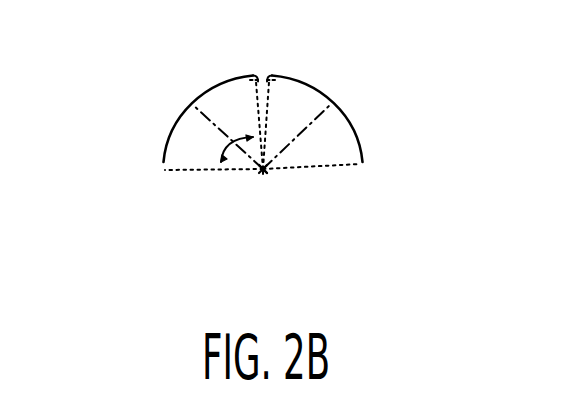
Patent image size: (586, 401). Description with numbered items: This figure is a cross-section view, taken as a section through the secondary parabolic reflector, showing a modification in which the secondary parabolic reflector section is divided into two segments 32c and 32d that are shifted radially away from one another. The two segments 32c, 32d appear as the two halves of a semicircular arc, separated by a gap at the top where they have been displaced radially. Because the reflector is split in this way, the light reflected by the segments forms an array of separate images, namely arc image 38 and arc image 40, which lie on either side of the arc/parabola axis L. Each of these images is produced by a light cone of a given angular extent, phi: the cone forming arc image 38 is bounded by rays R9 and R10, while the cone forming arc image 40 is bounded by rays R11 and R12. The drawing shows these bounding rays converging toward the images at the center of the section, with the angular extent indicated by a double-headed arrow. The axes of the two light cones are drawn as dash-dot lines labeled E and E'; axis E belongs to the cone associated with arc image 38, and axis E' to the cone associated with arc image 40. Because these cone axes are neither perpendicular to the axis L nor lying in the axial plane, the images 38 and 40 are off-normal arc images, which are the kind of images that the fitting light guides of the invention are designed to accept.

The segment 32c is at (208, 90).
The segment 32d is at (313, 79).
The ray R9 is at (256, 82).
The ray R10 is at (163, 164).
The ray R11 is at (269, 82).
The ray R12 is at (344, 165).
The axis E is at (208, 114).
The axis E' is at (321, 113).
The arc image 38 is at (258, 175).
The arc image 40 is at (268, 175).
The axis L is at (263, 173).